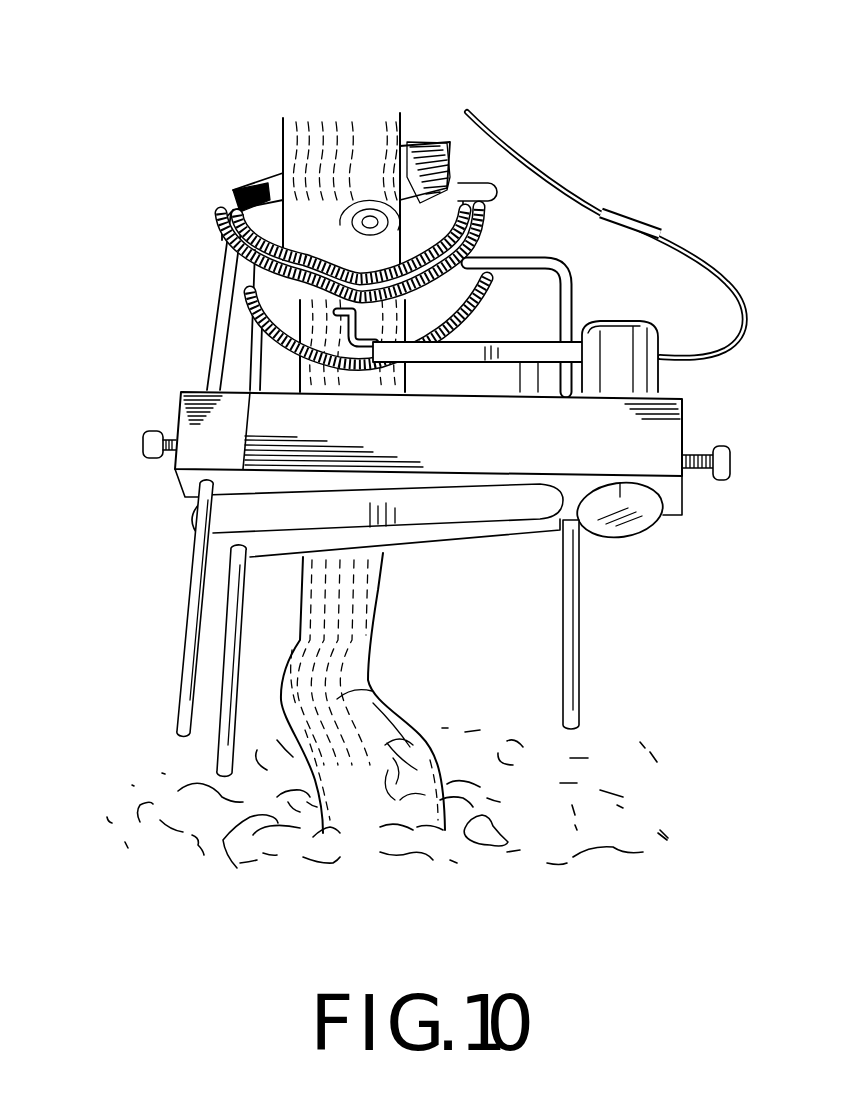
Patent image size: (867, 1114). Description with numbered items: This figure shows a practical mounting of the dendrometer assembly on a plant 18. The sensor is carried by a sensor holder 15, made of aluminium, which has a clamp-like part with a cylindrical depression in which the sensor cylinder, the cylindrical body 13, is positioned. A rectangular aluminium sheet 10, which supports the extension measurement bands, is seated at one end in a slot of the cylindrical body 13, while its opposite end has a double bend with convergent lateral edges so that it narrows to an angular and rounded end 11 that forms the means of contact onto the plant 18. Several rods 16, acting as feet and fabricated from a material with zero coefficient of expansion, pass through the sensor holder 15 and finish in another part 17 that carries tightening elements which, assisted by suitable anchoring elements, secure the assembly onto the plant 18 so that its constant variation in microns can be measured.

The aluminium sheet 10 is at (500, 337).
The angular and rounded end 11 is at (350, 313).
The cylindrical body 13 is at (627, 360).
The sensor holder 15 is at (297, 427).
The rods 16 is at (227, 638).
The part with tightening elements 17 is at (258, 195).
The plant 18 is at (373, 137).